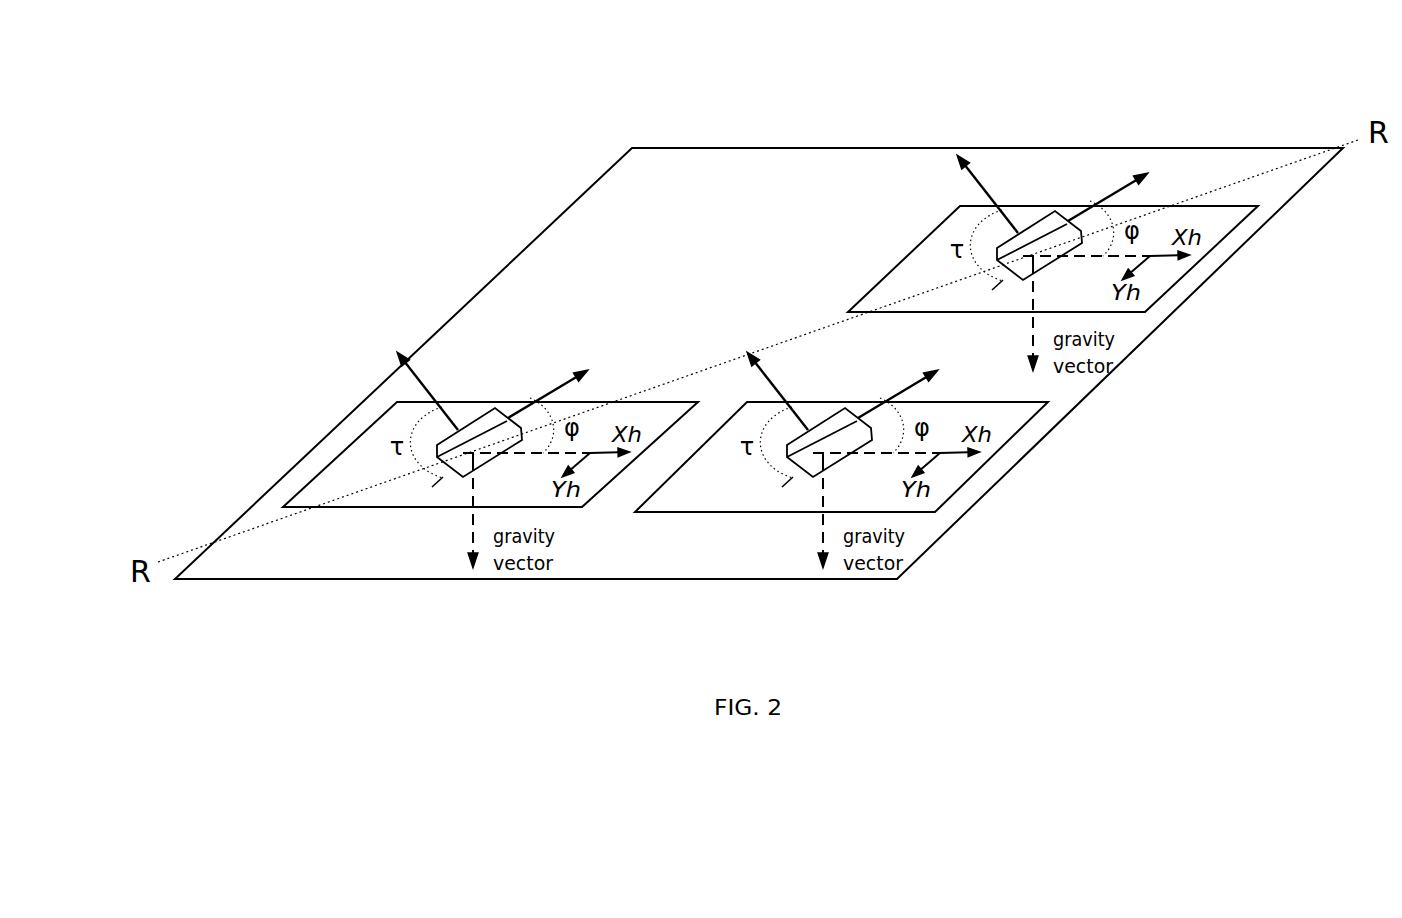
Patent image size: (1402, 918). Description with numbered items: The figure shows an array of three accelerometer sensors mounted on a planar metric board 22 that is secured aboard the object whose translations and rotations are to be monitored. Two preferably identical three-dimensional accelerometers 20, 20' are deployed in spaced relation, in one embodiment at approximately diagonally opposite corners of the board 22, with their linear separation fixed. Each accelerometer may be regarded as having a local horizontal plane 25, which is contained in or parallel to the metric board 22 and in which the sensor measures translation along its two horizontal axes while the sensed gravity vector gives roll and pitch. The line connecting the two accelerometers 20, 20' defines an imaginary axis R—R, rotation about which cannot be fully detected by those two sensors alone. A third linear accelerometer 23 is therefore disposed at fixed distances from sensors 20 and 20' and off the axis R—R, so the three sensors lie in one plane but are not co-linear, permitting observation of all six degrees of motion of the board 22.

The metric board 22 is at (768, 205).
The local horizontal plane 25 is at (360, 473).
The 3D accelerometer 20 is at (479, 404).
The third linear accelerometer 23 is at (833, 427).
The 3D accelerometer 20' is at (1039, 216).